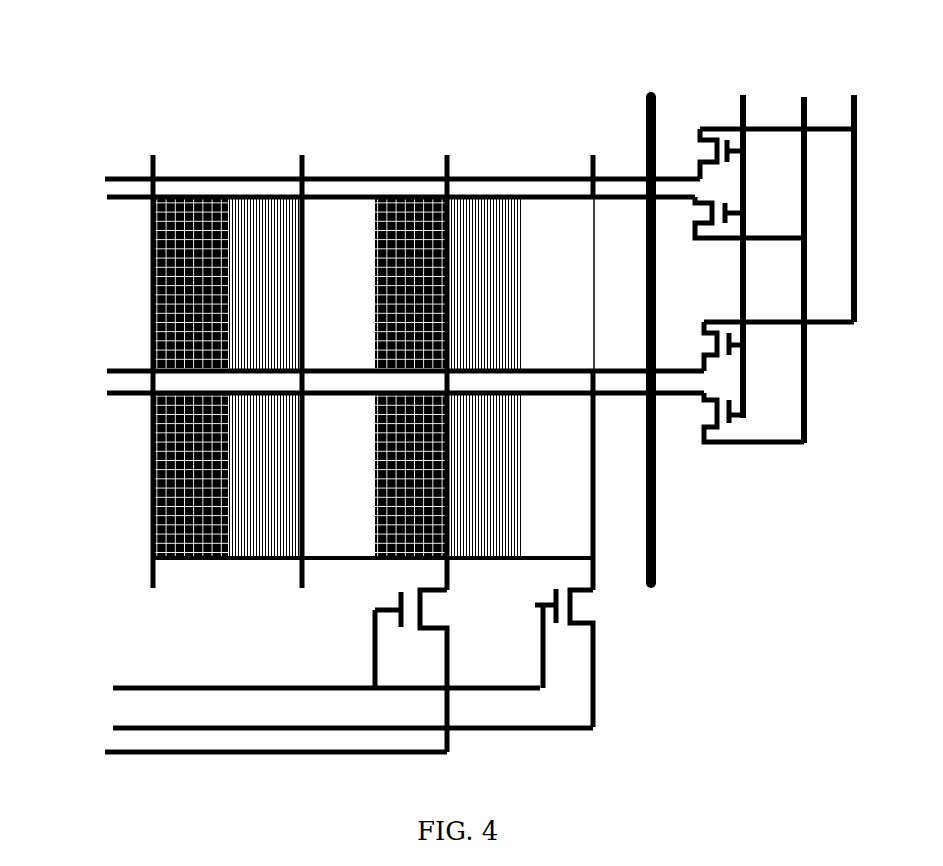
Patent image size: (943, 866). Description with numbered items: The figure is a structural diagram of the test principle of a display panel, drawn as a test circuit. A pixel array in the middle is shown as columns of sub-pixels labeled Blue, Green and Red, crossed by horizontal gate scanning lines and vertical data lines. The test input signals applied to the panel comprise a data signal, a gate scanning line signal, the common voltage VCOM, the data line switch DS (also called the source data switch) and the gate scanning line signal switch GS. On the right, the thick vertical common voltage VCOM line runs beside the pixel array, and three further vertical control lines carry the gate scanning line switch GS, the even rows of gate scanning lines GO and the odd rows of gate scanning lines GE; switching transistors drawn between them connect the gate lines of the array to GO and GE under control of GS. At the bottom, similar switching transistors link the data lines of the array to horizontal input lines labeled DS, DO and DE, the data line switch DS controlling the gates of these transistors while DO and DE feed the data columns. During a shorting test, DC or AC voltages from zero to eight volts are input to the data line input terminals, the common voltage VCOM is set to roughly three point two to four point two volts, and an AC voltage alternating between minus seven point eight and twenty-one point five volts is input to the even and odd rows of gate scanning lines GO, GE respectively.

The blue sub-pixel Blue is at (187, 197).
The green sub-pixel Green is at (347, 220).
The red sub-pixel Red is at (483, 220).
The common voltage VCOM is at (625, 312).
The gate scanning line signal switch GS is at (758, 225).
The even rows of gate scanning lines GO is at (809, 238).
The odd rows of gate scanning lines GE is at (869, 177).
The data line switch DS is at (287, 685).
The data odd signal line DO is at (314, 717).
The data even signal line DE is at (241, 752).